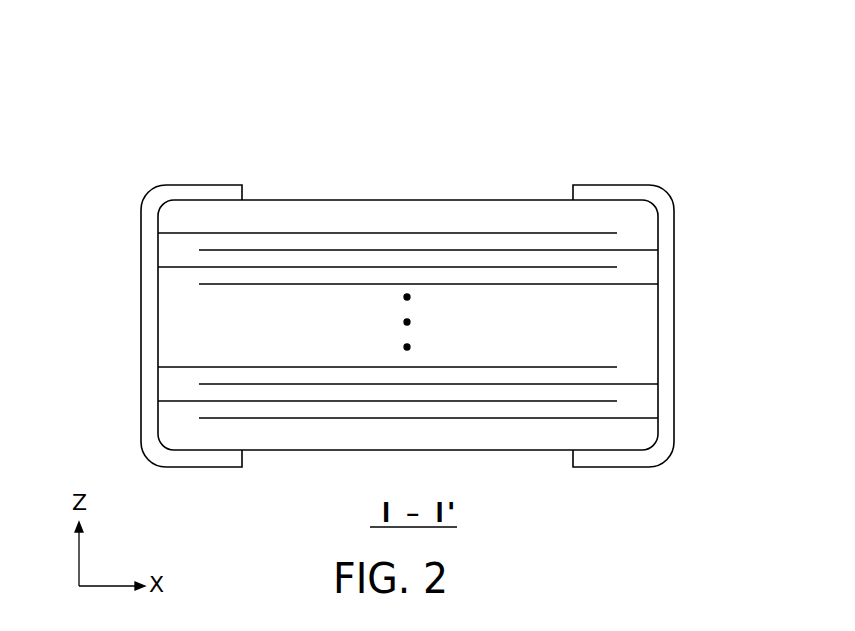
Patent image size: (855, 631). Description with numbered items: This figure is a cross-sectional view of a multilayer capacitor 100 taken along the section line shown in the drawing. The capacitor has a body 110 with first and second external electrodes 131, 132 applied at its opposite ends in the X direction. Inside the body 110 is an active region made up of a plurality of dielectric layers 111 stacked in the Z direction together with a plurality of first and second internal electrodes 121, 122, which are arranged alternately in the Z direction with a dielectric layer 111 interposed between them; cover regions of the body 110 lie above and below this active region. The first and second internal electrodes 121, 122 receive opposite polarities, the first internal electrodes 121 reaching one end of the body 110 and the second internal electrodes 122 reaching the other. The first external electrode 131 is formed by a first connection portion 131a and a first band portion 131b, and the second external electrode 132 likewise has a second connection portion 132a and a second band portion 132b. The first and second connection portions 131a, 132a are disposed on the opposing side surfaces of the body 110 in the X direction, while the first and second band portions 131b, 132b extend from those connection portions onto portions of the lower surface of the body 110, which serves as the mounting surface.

The multilayer capacitor 100 is at (387, 57).
The body 110 is at (407, 200).
The dielectric layer 111 is at (644, 270).
The first internal electrode 121 is at (178, 267).
The second internal electrode 122 is at (617, 284).
The first external electrode 131 is at (88, 104).
The first connection portion 131a is at (141, 243).
The first band portion 131b is at (203, 193).
The second external electrode 132 is at (583, 104).
The second connection portion 132a is at (675, 243).
The second band portion 132b is at (611, 193).